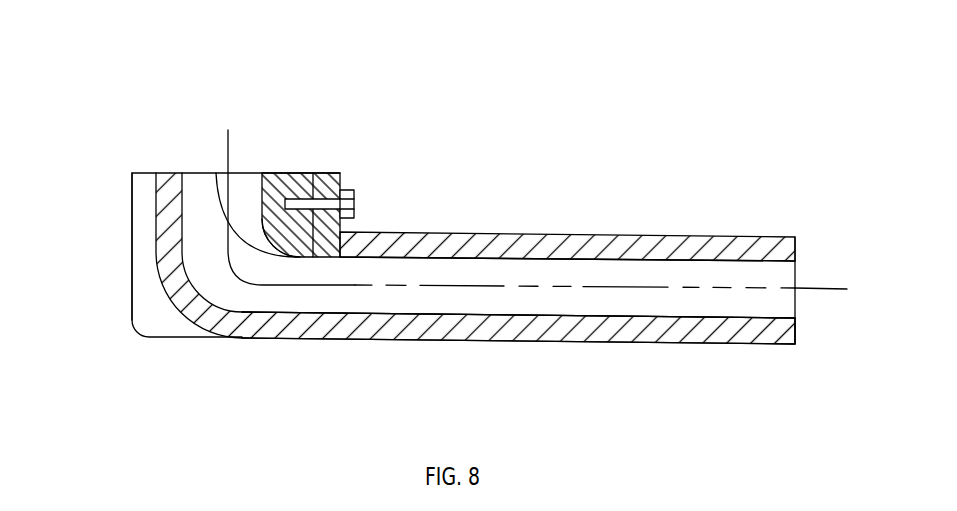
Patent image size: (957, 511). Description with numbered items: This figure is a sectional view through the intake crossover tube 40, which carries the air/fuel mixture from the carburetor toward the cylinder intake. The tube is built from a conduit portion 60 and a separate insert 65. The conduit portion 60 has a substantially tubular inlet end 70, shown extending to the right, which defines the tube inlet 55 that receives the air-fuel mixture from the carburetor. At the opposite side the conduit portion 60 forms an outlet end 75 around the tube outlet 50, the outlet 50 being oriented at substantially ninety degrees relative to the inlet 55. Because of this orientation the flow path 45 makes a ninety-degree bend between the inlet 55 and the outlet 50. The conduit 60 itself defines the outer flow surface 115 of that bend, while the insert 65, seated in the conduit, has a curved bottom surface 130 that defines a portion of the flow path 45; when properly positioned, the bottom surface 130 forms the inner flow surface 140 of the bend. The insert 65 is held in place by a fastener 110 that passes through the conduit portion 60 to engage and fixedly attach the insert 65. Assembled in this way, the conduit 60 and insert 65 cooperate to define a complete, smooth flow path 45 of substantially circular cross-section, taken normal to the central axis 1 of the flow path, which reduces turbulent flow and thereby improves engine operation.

The intake crossover tube 40 is at (655, 63).
The tube outlet 50 is at (195, 170).
The outlet end 75 is at (148, 195).
The outer flow surface 115 is at (217, 300).
The conduit portion 60 is at (727, 330).
The inlet end 70 is at (763, 237).
The insert 65 is at (285, 180).
The fastener 110 is at (350, 203).
The inner flow surface 140 is at (252, 182).
The bottom surface 130 is at (263, 238).
The flow path 45 is at (593, 262).
The tube inlet 55 is at (768, 273).
The central axis 1 is at (547, 202).